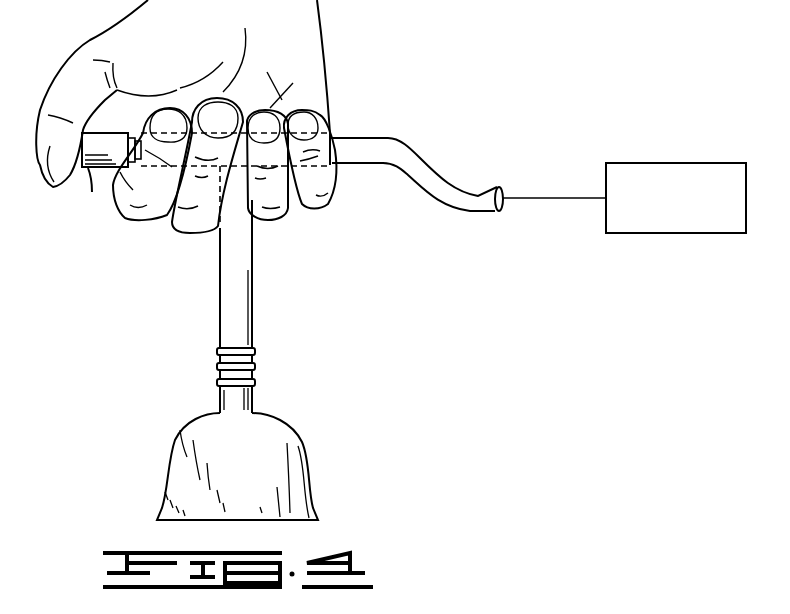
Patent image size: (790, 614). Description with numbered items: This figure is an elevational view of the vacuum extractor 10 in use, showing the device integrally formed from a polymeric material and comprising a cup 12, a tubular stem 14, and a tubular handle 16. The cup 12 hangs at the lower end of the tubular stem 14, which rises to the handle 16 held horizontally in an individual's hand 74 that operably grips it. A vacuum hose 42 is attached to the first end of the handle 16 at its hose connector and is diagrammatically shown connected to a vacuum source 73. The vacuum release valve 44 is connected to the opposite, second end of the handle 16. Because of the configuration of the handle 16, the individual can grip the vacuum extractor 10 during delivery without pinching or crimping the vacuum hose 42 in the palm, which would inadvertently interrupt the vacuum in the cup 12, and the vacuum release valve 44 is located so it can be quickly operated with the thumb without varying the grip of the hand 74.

The vacuum extractor 10 is at (252, 320).
The cup 12 is at (304, 460).
The tubular stem 14 is at (220, 283).
The tubular handle 16 is at (280, 97).
The vacuum hose 42 is at (419, 148).
The vacuum release valve 44 is at (92, 192).
The vacuum source 73 is at (683, 163).
The hand 74 is at (324, 35).